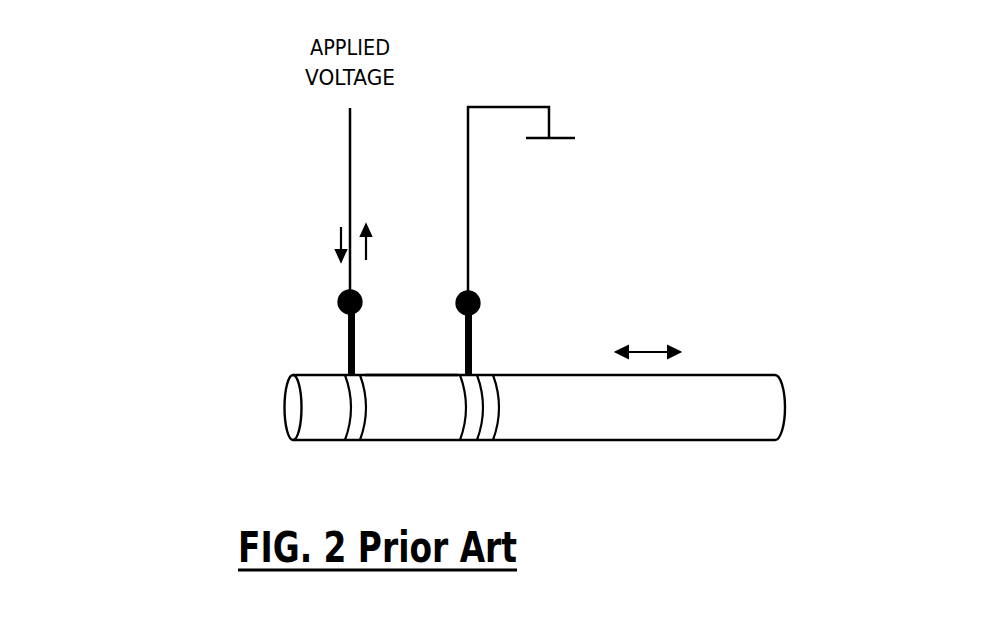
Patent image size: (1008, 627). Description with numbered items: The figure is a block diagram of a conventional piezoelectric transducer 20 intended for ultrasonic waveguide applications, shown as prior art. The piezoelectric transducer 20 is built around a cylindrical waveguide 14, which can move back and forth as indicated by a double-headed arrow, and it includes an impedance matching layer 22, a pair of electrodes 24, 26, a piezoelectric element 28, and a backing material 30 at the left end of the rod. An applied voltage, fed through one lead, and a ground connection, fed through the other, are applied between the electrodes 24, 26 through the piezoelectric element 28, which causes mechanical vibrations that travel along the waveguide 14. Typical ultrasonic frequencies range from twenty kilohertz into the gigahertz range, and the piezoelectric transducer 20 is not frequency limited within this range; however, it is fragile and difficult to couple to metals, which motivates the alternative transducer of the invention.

The waveguide 14 is at (552, 374).
The piezoelectric transducer 20 is at (548, 67).
The impedance matching layer 22 is at (478, 441).
The electrode 24 is at (461, 441).
The electrode 26 is at (352, 441).
The piezoelectric element 28 is at (390, 372).
The backing material 30 is at (287, 412).